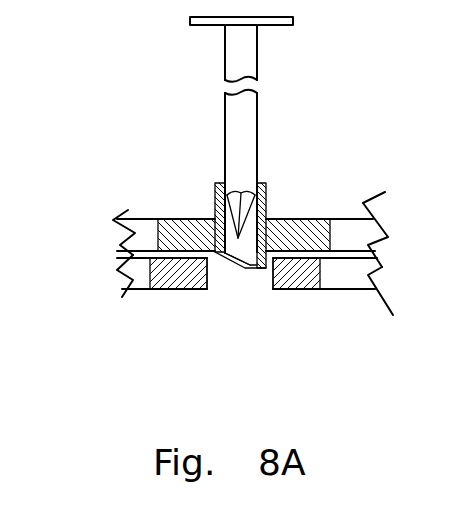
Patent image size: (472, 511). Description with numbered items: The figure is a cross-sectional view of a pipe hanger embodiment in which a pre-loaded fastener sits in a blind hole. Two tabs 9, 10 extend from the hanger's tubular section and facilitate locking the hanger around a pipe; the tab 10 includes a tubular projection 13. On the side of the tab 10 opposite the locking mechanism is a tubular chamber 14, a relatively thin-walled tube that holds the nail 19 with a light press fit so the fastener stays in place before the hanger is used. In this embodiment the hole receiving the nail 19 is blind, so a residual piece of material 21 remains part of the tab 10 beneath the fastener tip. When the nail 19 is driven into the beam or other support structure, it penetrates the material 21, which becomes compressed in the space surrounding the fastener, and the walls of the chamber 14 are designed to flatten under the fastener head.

The nail 19 is at (258, 98).
The tubular chamber 14 is at (267, 195).
The tab 10 is at (143, 222).
The tab 9 is at (133, 263).
The residual piece of material 21 is at (233, 258).
The tubular projection 13 is at (266, 262).